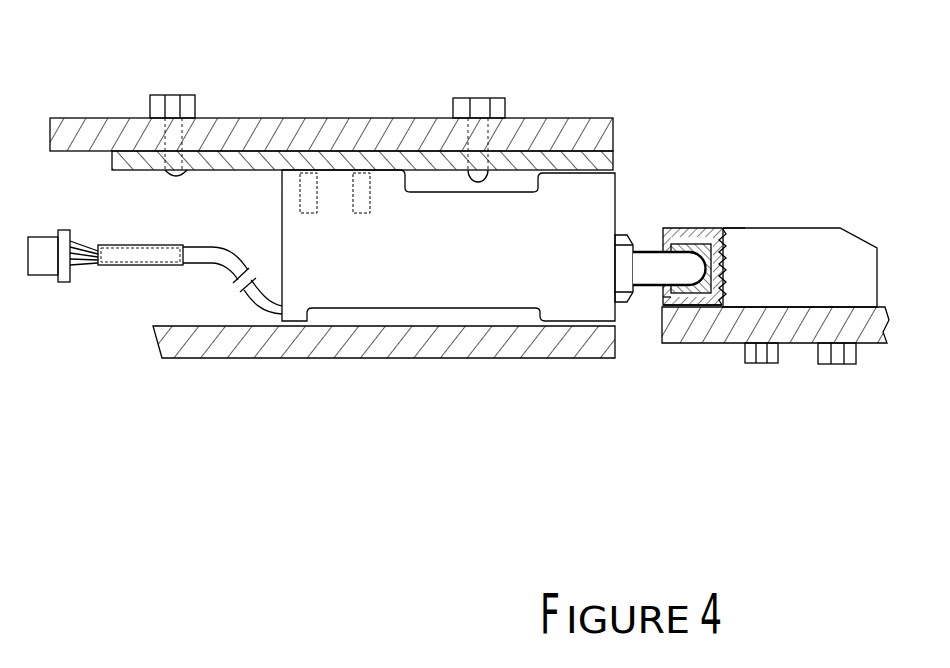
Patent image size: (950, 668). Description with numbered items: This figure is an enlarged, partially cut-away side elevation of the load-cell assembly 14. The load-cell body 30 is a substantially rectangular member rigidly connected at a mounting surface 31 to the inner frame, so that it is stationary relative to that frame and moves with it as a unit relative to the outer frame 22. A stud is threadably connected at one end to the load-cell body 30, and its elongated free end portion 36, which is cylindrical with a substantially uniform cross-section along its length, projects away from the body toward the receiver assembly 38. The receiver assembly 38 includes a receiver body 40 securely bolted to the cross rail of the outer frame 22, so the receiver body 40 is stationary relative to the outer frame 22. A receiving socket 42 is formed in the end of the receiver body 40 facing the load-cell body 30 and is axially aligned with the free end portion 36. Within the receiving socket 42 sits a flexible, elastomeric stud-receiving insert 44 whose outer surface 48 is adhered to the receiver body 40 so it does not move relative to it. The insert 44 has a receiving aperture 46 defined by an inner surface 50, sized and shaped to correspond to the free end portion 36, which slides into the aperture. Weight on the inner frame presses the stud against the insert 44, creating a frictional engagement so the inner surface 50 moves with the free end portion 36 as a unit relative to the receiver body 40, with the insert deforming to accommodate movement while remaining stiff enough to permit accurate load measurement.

The load-cell assembly 14 is at (385, 170).
The mounting surface 31 is at (362, 160).
The load-cell body 30 is at (457, 283).
The free end portion 36 is at (643, 262).
The receiving socket 42 is at (689, 232).
The inner surface 50 is at (676, 232).
The stud-receiving insert 44 is at (656, 294).
The receiving aperture 46 is at (660, 306).
The outer surface 48 is at (691, 302).
The receiver body 40 is at (780, 240).
The receiver assembly 38 is at (741, 227).
The outer frame 22 is at (797, 353).